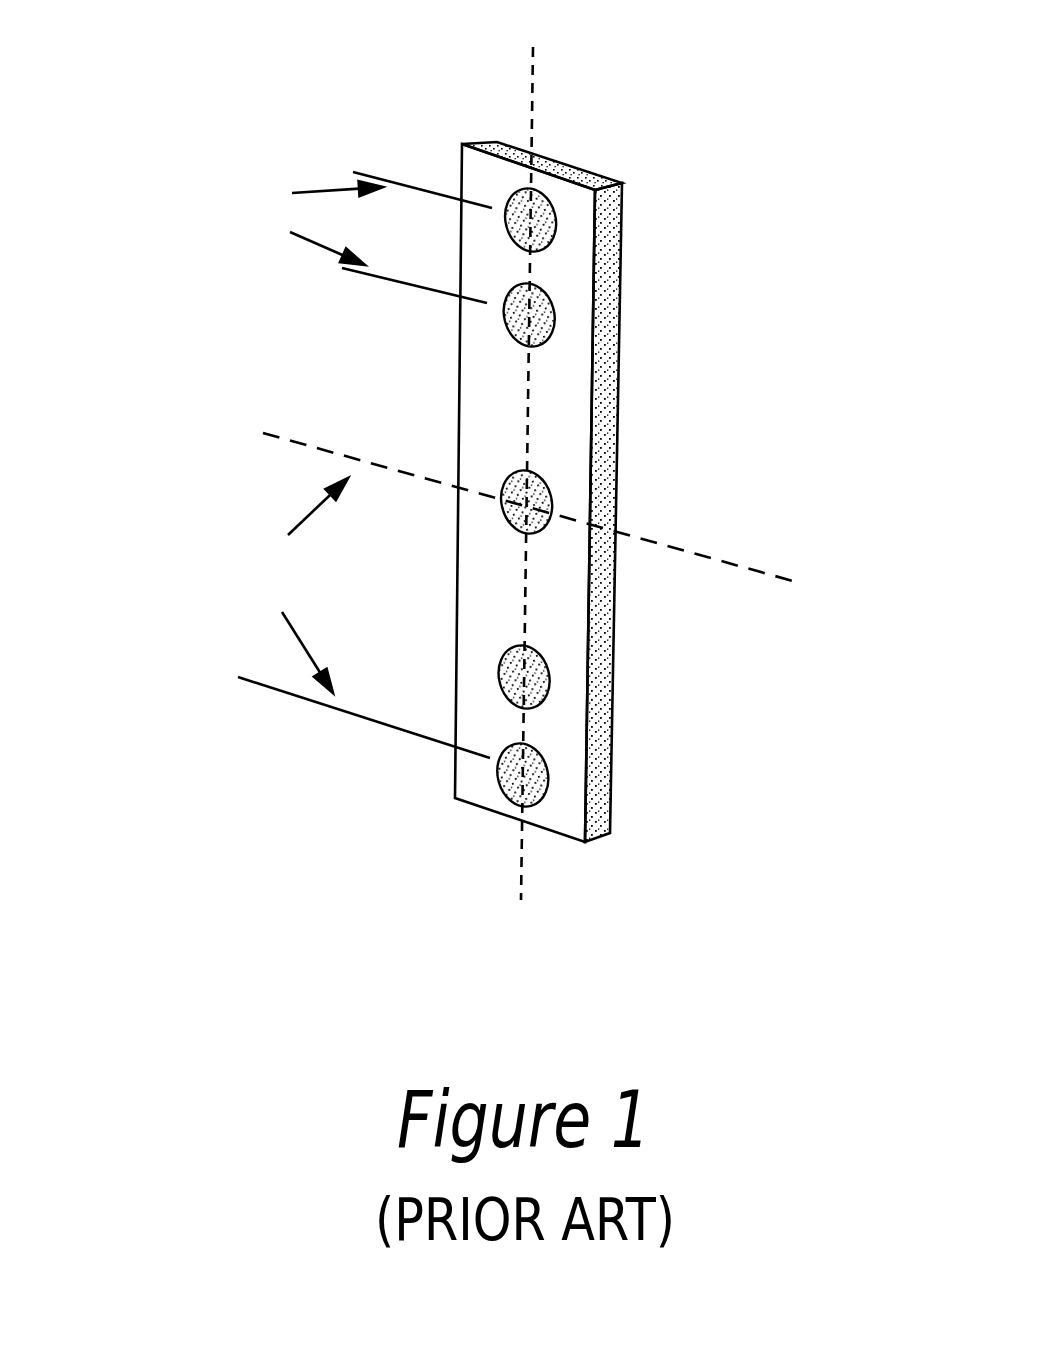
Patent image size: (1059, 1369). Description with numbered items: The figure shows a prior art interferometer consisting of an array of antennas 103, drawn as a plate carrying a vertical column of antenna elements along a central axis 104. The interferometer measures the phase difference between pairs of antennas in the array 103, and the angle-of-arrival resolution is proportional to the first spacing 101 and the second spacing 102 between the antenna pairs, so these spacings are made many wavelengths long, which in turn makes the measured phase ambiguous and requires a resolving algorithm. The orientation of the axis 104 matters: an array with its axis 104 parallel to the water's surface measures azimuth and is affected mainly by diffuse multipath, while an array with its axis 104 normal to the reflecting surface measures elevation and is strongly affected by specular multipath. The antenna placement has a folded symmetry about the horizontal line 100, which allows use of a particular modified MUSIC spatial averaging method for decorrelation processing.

The horizontal line 100 is at (805, 562).
The spacing d1 101 is at (194, 262).
The spacing d2 102 is at (186, 524).
The array of antennas 103 is at (642, 333).
The axis 104 is at (556, 94).